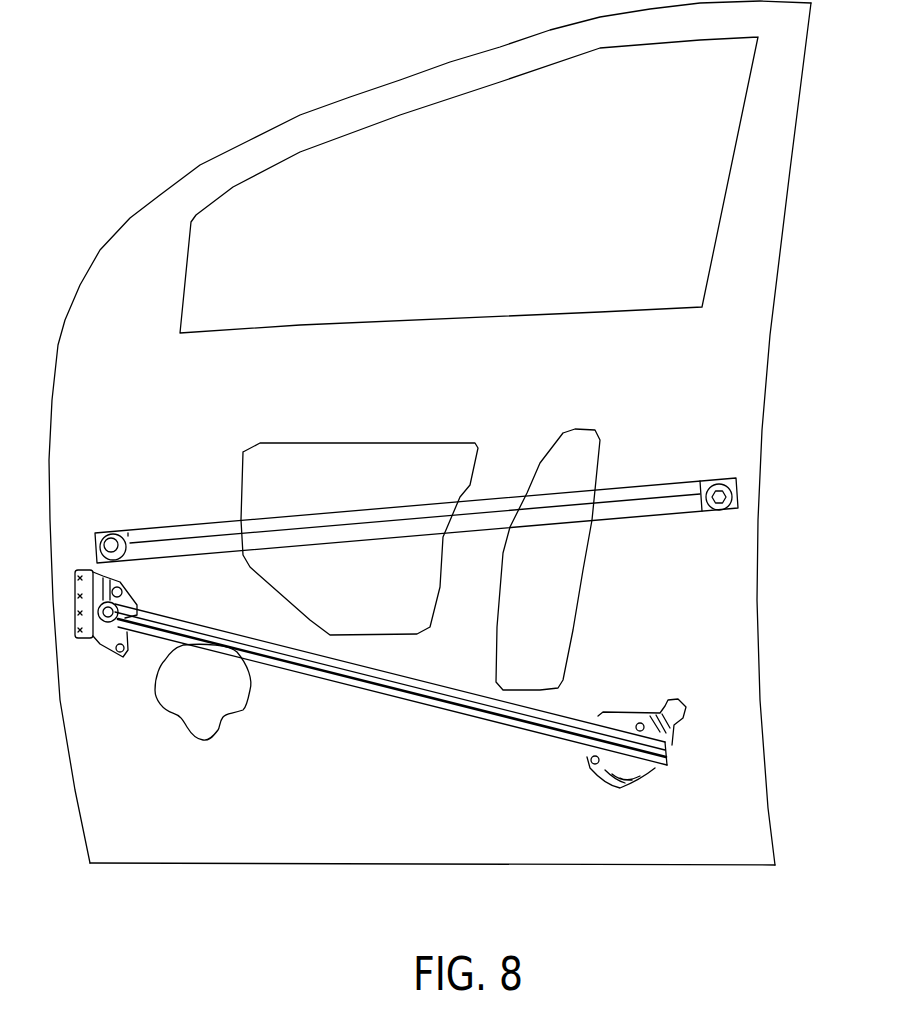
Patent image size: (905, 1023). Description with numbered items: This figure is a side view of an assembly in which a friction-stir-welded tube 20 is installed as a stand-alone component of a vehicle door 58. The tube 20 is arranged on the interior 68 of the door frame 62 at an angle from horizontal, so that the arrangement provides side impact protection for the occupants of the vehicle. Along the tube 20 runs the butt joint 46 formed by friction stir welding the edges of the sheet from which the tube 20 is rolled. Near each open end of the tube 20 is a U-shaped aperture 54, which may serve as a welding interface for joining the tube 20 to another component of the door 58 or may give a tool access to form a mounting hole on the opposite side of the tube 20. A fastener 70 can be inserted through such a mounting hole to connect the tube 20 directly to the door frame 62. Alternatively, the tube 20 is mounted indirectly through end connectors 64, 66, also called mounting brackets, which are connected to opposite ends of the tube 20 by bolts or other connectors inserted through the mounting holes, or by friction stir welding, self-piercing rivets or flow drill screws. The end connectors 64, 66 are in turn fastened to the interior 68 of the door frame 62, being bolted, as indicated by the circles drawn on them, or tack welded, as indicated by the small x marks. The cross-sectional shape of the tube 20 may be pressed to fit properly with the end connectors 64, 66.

The tube 20 is at (393, 672).
The butt joint 46 is at (214, 532).
The U-shaped aperture 54 is at (130, 531).
The vehicle door 58 is at (138, 195).
The door frame 62 is at (708, 589).
The end connector 64 is at (101, 643).
The end connector 66 is at (603, 778).
The interior of the door frame 68 is at (260, 827).
The fastener 70 is at (106, 536).